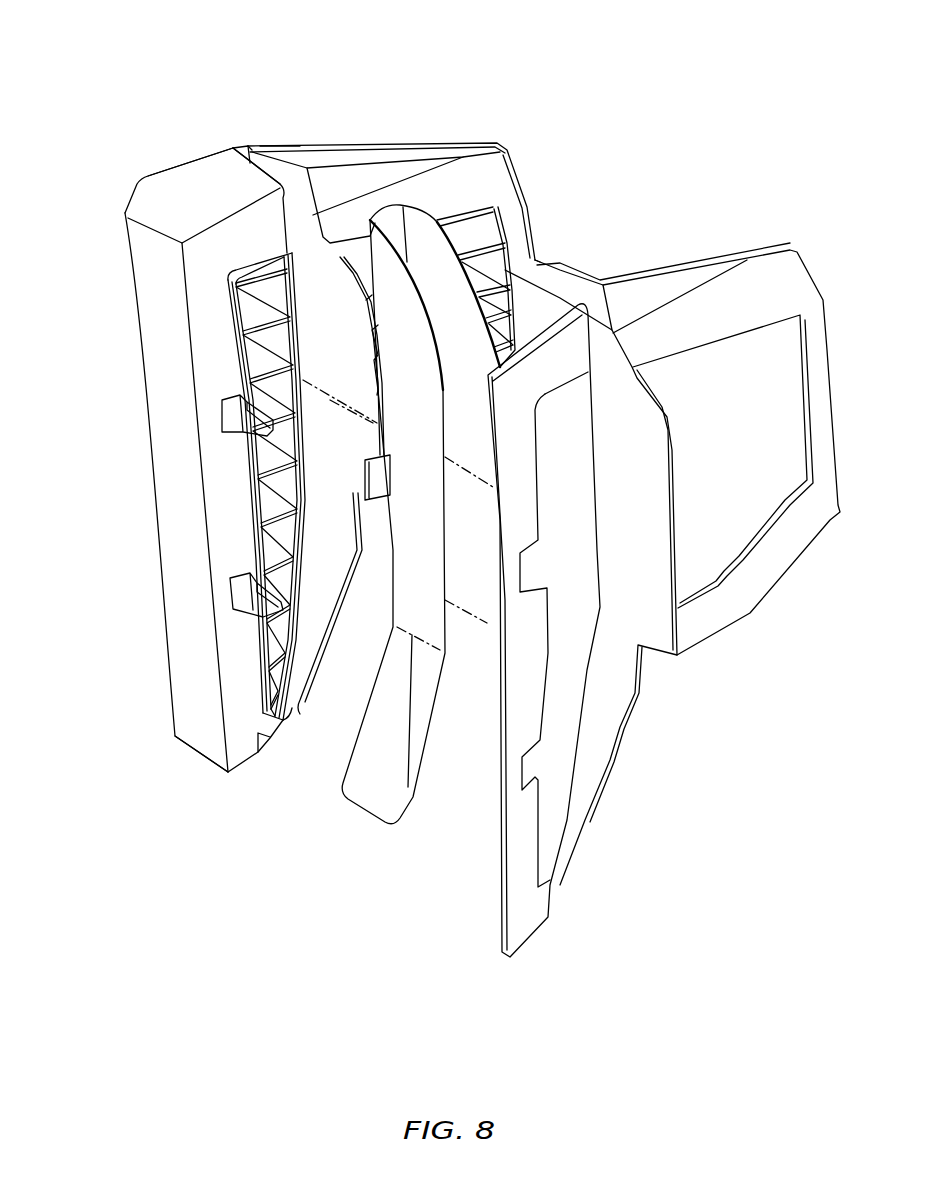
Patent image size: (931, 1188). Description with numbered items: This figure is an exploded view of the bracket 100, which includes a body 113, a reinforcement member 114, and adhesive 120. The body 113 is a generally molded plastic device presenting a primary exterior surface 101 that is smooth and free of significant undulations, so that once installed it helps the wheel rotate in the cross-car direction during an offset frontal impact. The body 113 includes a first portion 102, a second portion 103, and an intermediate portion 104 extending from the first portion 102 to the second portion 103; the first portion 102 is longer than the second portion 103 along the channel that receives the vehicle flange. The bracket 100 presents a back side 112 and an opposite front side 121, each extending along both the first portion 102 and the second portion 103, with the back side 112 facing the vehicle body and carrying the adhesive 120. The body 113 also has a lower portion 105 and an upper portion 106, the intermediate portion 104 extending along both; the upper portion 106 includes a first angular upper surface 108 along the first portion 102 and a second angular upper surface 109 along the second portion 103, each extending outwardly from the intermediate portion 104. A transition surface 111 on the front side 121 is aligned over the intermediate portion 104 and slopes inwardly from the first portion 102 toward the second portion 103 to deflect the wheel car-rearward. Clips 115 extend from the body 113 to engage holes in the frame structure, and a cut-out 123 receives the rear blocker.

The bracket 100 is at (673, 138).
The primary exterior surface 101 is at (198, 158).
The first portion 102 is at (187, 147).
The second portion 103 is at (417, 128).
The intermediate portion 104 is at (247, 140).
The lower portion 105 is at (257, 792).
The upper portion 106 is at (107, 195).
The first angular upper surface 108 is at (177, 195).
The second angular upper surface 109 is at (332, 157).
The transition surface 111 is at (281, 150).
The back side 112 is at (213, 250).
The body 113 is at (165, 758).
The reinforcement member 114 is at (360, 825).
The clips 115 is at (267, 607).
The adhesive 120 is at (487, 963).
The front side 121 is at (217, 150).
The cut-out 123 is at (683, 767).